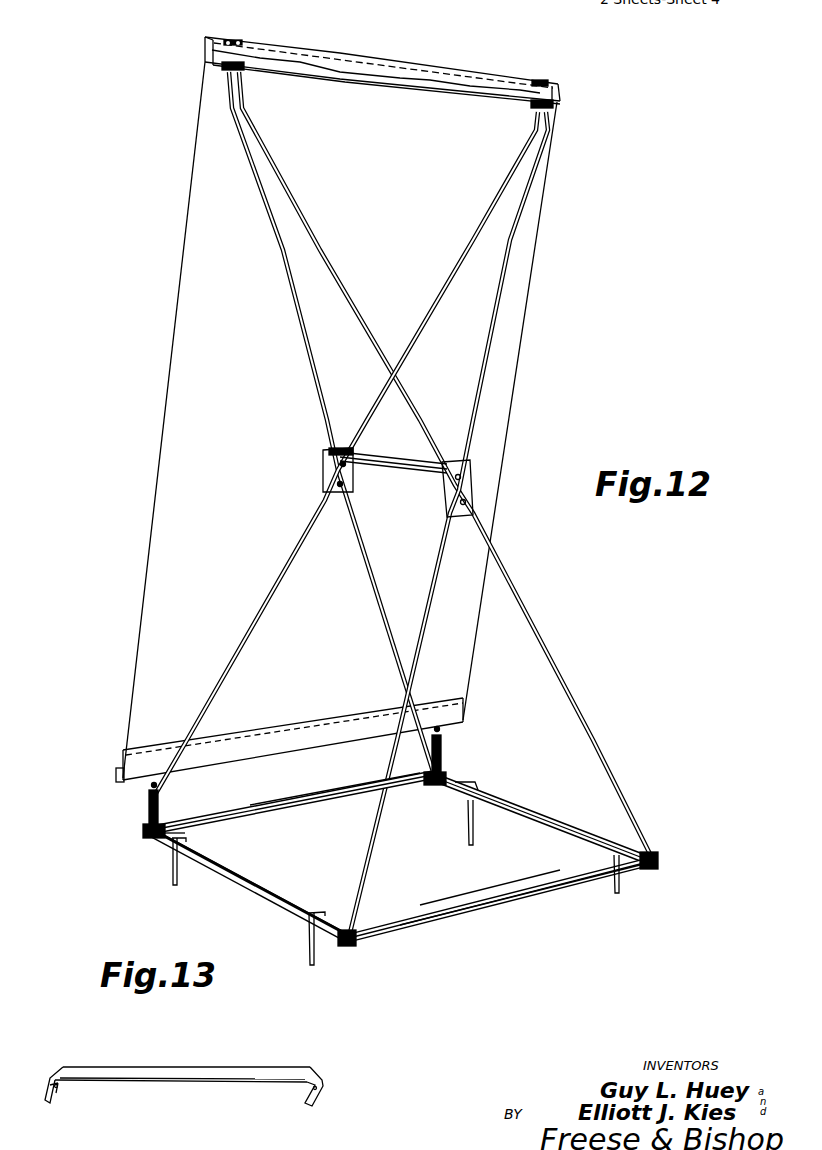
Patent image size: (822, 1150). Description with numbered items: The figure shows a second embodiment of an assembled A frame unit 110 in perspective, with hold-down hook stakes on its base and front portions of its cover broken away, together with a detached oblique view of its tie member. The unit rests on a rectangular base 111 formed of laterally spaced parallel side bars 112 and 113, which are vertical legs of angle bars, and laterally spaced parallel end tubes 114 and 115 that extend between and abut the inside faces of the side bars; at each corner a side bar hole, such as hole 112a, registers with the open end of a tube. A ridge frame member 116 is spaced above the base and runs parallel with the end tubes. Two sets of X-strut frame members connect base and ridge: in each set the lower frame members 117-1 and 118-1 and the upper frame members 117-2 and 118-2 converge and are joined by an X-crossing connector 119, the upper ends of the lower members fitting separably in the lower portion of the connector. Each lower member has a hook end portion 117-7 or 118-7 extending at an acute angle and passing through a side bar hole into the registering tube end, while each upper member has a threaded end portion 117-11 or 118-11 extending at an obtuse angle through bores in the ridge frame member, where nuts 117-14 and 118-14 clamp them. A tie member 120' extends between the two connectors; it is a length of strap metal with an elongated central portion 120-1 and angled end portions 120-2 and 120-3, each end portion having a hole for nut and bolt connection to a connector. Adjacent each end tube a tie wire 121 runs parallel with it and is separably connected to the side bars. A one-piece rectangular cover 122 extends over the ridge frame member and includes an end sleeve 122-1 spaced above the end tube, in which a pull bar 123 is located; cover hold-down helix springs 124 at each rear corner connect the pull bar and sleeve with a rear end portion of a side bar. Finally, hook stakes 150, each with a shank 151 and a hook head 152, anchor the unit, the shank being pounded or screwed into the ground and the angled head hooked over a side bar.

In FIG. 12, the assembled A frame unit 110 is at (672, 860).
In FIG. 12, the rectangular base 111 is at (522, 921).
In FIG. 12, the side bar 112 is at (248, 890).
In FIG. 12, the hole of base side bar 112a is at (148, 840).
In FIG. 12, the side bar 113 is at (540, 815).
In FIG. 12, the end tube 114 is at (242, 806).
In FIG. 12, the end tube 115 is at (420, 931).
In FIG. 12, the ridge frame member 116 is at (378, 80).
In FIG. 12, the lower X-strut frame member 117-1 is at (250, 638).
In FIG. 12, the upper X-strut frame member 117-2 is at (440, 301).
In FIG. 12, the lower hook end portion 117-7 is at (163, 828).
In FIG. 12, the upper threaded end portion 117-11 is at (538, 110).
In FIG. 12, the nut 117-14 is at (538, 80).
In FIG. 12, the lower X-strut frame member 118-1 is at (596, 728).
In FIG. 12, the upper X-strut frame member 118-2 is at (288, 292).
In FIG. 12, the lower hook end portion 118-7 is at (421, 786).
In FIG. 12, the upper threaded end portion 118-11 is at (230, 72).
In FIG. 12, the nut 118-14 is at (278, 80).
In FIG. 12, the X-crossing connector 119 is at (322, 470).
In FIG. 12, the tie member 120' is at (393, 485).
In FIG. 13, the tie member 120' is at (213, 1089).
In FIG. 13, the elongated central portion 120-1 is at (184, 1078).
In FIG. 13, the angled end portion 120-2 is at (52, 1102).
In FIG. 13, the angled end portion 120-3 is at (322, 1086).
In FIG. 12, the tie wire 121 is at (312, 808).
In FIG. 12, the one-piece rectangular cover 122 is at (158, 440).
In FIG. 12, the end sleeve 122-1 is at (120, 762).
In FIG. 12, the pull bar 123 is at (116, 780).
In FIG. 12, the cover hold-down helix spring 124 is at (150, 800).
In FIG. 12, the hook stake 150 is at (168, 862).
In FIG. 12, the shank 151 is at (172, 880).
In FIG. 12, the hook head 152 is at (168, 832).